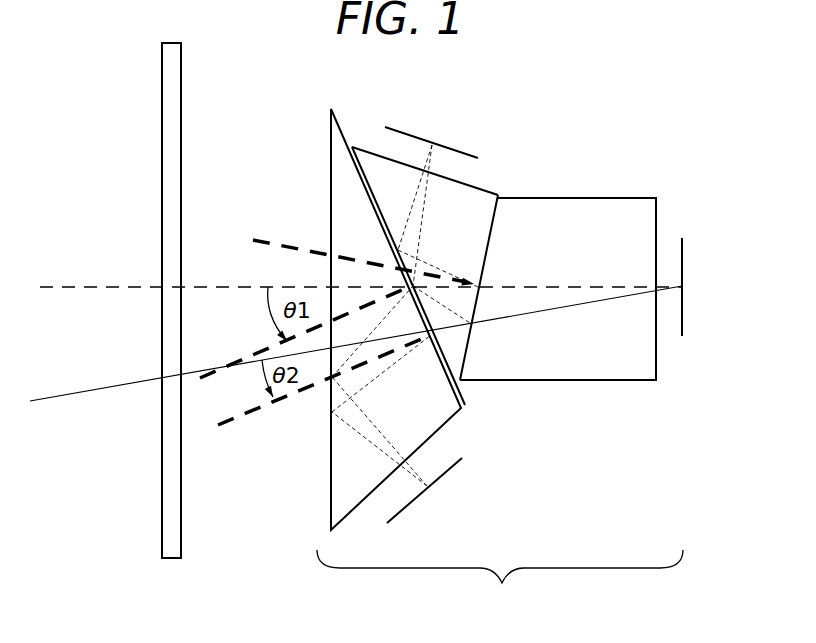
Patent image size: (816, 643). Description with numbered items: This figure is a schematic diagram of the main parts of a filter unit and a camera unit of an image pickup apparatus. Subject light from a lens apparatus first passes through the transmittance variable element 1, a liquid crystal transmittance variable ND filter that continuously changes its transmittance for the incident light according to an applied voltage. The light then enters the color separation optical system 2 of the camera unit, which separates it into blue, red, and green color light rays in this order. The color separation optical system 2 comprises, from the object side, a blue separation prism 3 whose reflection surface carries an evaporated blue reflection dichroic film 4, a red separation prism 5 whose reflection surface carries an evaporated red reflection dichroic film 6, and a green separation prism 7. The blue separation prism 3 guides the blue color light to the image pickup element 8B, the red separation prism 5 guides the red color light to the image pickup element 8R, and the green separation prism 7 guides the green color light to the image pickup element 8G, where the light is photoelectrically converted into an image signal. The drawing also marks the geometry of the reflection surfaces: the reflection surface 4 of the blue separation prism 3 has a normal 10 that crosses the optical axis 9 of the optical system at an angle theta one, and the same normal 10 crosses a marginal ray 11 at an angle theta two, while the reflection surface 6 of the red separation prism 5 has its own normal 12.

The transmittance variable element 1 is at (172, 86).
The color separation optical system 2 is at (500, 583).
The blue separation prism 3 is at (438, 418).
The blue reflection dichroic film 4 is at (467, 402).
The red separation prism 5 is at (478, 200).
The red reflection dichroic film 6 is at (497, 218).
The green separation prism 7 is at (622, 362).
The image pickup element for red color 8R is at (407, 134).
The image pickup element for green color 8G is at (684, 251).
The image pickup element for blue color 8B is at (448, 473).
The optical axis 9 is at (107, 290).
The normal of the reflection surface of the blue separation prism 10 is at (262, 351).
The marginal ray 11 is at (100, 390).
The normal of the reflection surface of the red separation prism 12 is at (264, 238).